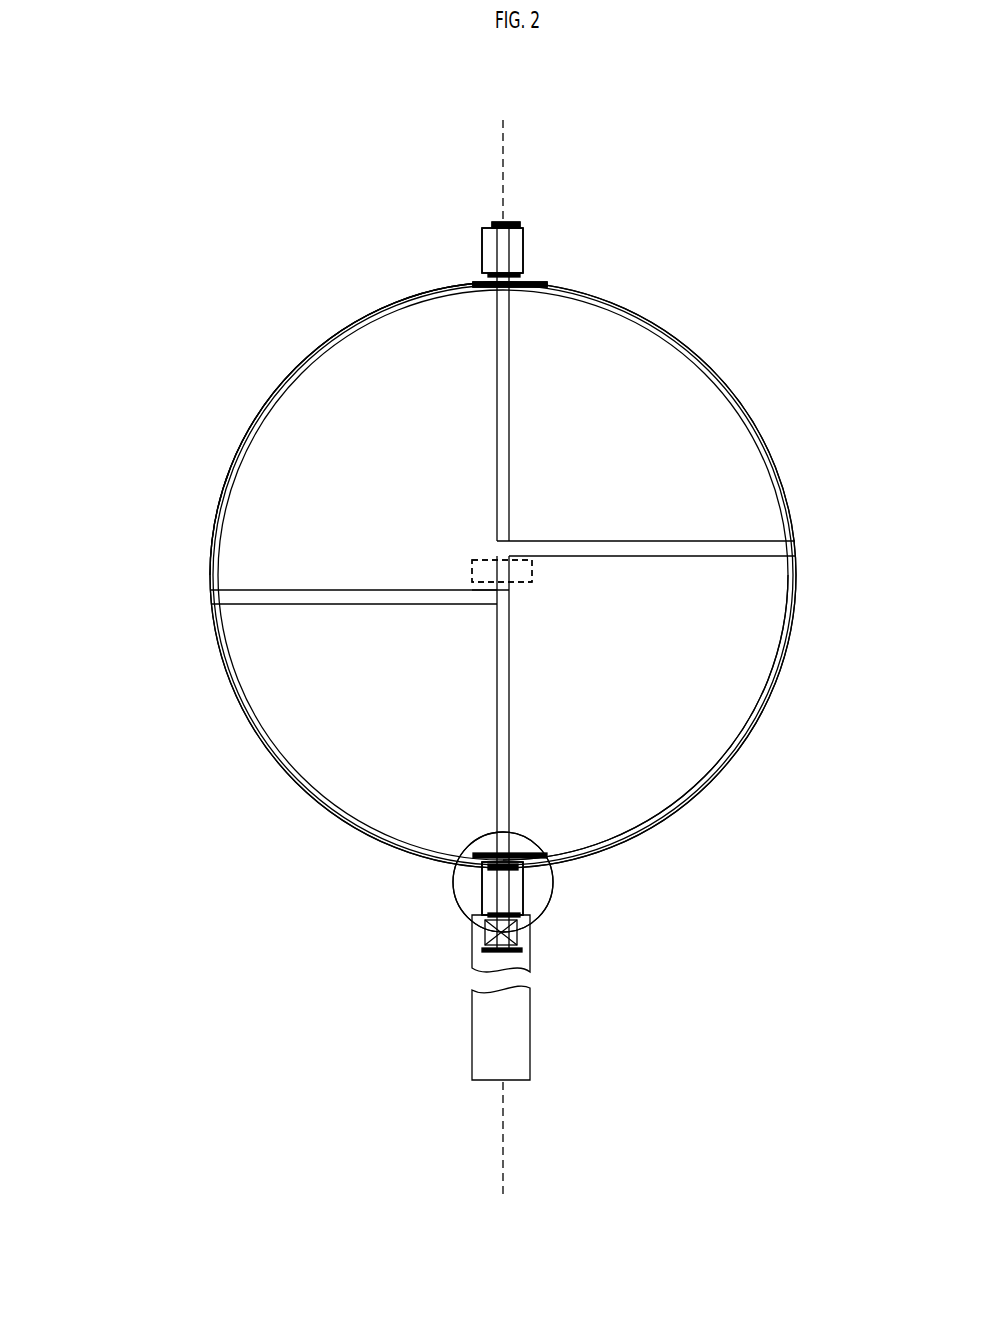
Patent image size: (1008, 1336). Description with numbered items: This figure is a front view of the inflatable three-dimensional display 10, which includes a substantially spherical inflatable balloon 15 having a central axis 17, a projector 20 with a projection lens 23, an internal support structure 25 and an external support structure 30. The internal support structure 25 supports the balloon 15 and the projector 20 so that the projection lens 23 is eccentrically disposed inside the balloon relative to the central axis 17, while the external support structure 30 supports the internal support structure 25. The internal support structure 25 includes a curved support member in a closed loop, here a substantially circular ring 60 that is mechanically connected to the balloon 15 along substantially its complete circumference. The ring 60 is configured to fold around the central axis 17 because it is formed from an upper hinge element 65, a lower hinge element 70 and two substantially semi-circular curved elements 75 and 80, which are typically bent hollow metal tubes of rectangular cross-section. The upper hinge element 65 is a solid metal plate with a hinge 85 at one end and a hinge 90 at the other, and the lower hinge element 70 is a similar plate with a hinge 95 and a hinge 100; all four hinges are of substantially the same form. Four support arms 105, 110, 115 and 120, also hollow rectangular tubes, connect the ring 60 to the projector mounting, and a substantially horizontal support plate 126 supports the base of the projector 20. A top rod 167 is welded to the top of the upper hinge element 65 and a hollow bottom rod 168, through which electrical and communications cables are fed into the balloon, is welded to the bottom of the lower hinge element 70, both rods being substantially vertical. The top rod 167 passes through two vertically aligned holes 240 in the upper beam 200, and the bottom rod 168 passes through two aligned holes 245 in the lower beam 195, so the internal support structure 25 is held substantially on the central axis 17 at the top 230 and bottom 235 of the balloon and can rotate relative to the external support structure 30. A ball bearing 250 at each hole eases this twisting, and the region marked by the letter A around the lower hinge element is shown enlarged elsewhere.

The inflatable three-dimensional display 10 is at (313, 325).
The inflatable balloon 15 is at (784, 482).
The central axis 17 is at (500, 173).
The projector 20 is at (483, 573).
The projection lens 23 is at (508, 575).
The internal support structure 25 is at (762, 372).
The external support structure 30 is at (462, 958).
The ring 60 is at (248, 430).
The upper hinge element 65 is at (479, 282).
The lower hinge element 70 is at (547, 853).
The curved element 75 is at (212, 628).
The curved element 80 is at (757, 712).
The hinge 85 is at (465, 286).
The hinge 90 is at (548, 283).
The hinge 95 is at (470, 893).
The hinge 100 is at (523, 860).
The support arm 105 is at (510, 450).
The support arm 110 is at (510, 745).
The support arm 115 is at (325, 597).
The support arm 120 is at (762, 548).
The support plate 126 is at (548, 590).
The top rod 167 is at (494, 247).
The bottom rod 168 is at (472, 920).
The lower beam 195 is at (492, 905).
The upper beam 200 is at (478, 246).
The top 230 is at (545, 257).
The bottom 235 is at (423, 932).
The holes 240 is at (512, 262).
The holes 245 is at (524, 896).
The ball bearing 250 is at (492, 222).
The region A is at (445, 860).